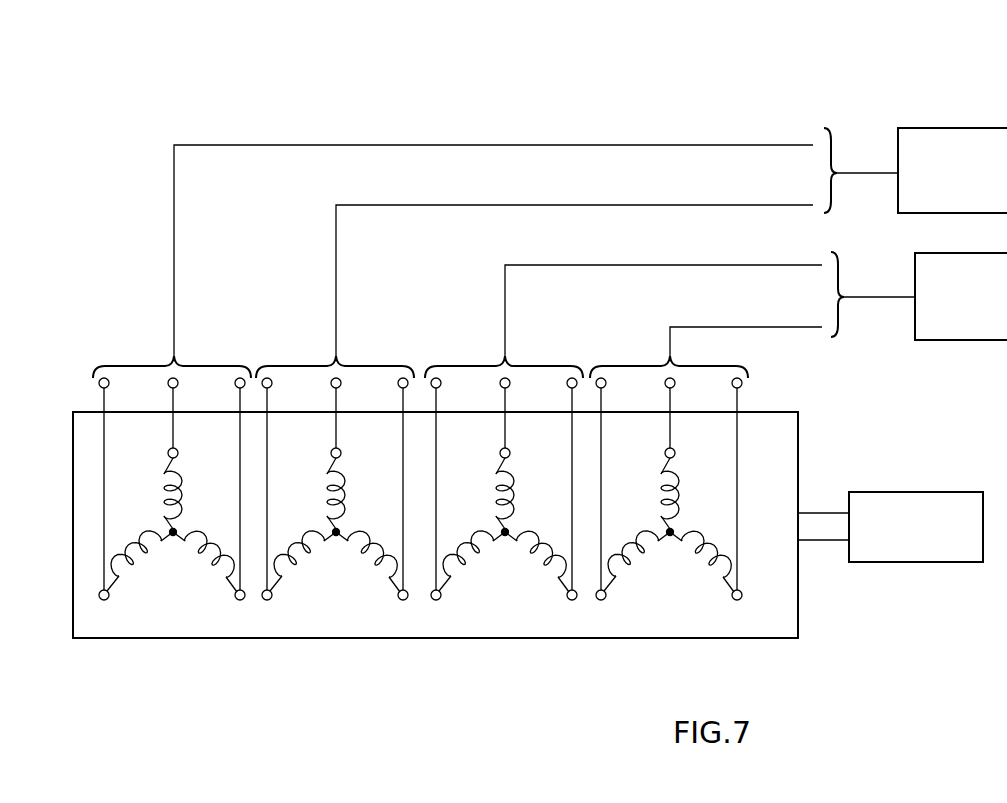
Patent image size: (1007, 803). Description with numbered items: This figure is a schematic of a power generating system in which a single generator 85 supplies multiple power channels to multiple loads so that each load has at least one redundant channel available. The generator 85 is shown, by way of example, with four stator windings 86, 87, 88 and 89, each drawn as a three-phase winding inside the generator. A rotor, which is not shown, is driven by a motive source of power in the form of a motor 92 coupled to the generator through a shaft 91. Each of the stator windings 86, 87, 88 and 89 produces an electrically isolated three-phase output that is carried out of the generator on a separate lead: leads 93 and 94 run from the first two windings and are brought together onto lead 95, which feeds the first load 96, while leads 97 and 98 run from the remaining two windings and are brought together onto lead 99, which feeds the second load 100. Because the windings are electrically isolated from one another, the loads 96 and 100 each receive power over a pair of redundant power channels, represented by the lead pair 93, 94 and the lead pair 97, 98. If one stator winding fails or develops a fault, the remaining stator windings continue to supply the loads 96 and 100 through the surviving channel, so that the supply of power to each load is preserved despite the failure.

The generator 85 is at (102, 638).
The stator winding 86 is at (168, 598).
The stator winding 87 is at (328, 600).
The stator winding 88 is at (502, 600).
The stator winding 89 is at (663, 598).
The shaft 91 is at (818, 541).
The motor 92 is at (888, 492).
The lead 93 is at (258, 144).
The lead 94 is at (360, 204).
The lead 95 is at (868, 172).
The load 96 is at (935, 128).
The lead 97 is at (528, 265).
The lead 98 is at (692, 325).
The lead 99 is at (873, 293).
The load 100 is at (963, 341).